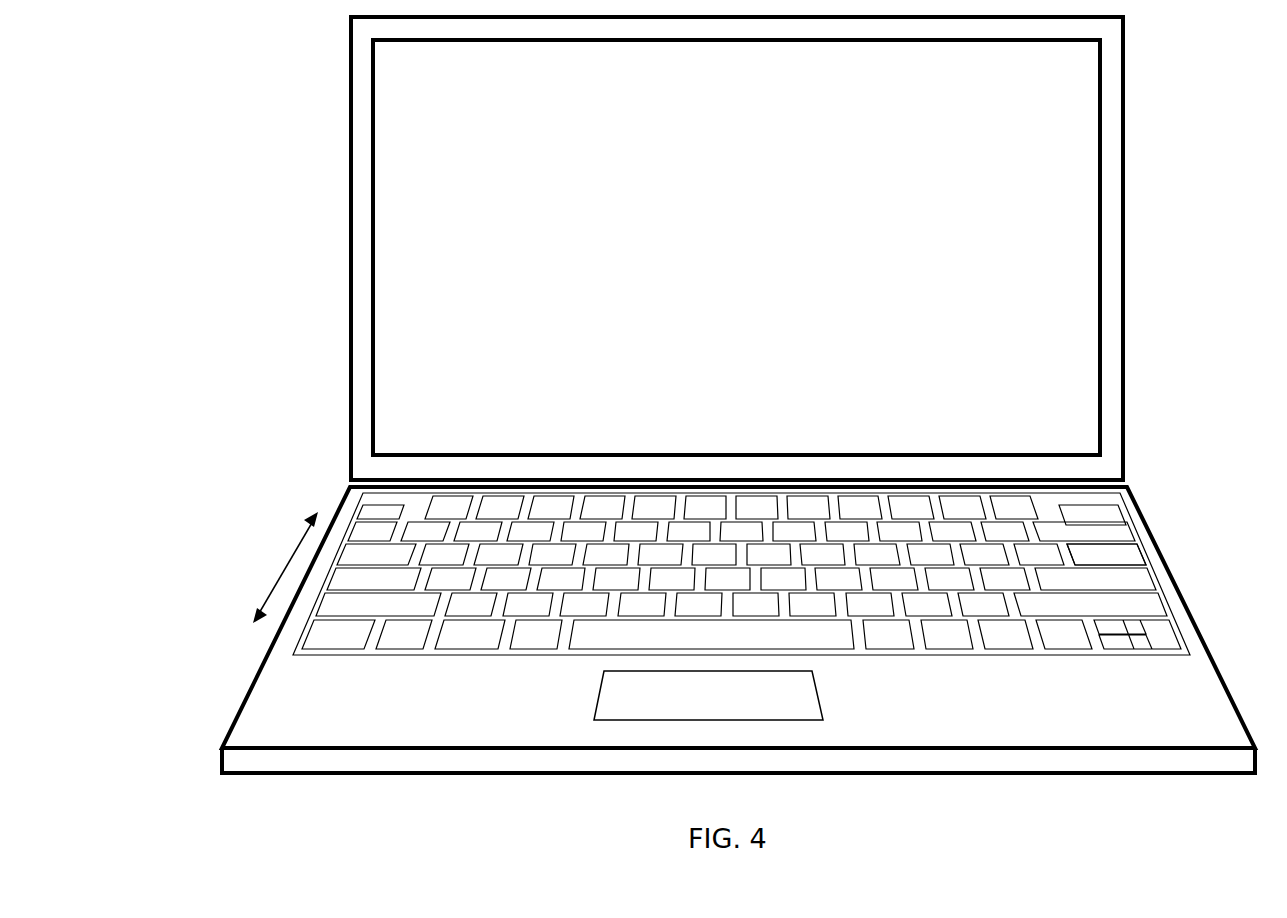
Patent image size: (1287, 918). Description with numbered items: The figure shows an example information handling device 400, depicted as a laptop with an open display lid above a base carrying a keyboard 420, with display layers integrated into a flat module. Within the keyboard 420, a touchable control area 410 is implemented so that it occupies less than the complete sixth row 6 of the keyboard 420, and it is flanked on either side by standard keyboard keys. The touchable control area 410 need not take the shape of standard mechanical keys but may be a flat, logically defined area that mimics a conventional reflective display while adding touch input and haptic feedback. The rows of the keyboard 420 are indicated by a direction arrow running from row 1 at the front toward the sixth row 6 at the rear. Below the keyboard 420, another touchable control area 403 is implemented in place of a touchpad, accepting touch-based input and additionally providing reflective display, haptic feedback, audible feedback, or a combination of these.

The information handling device 400 is at (236, 180).
The touchable control area 410 is at (1020, 497).
The keyboard 420 is at (1122, 560).
The touchable control area 403 is at (708, 695).
The sixth row 6 is at (290, 552).
The direction indicator 1 is at (251, 632).